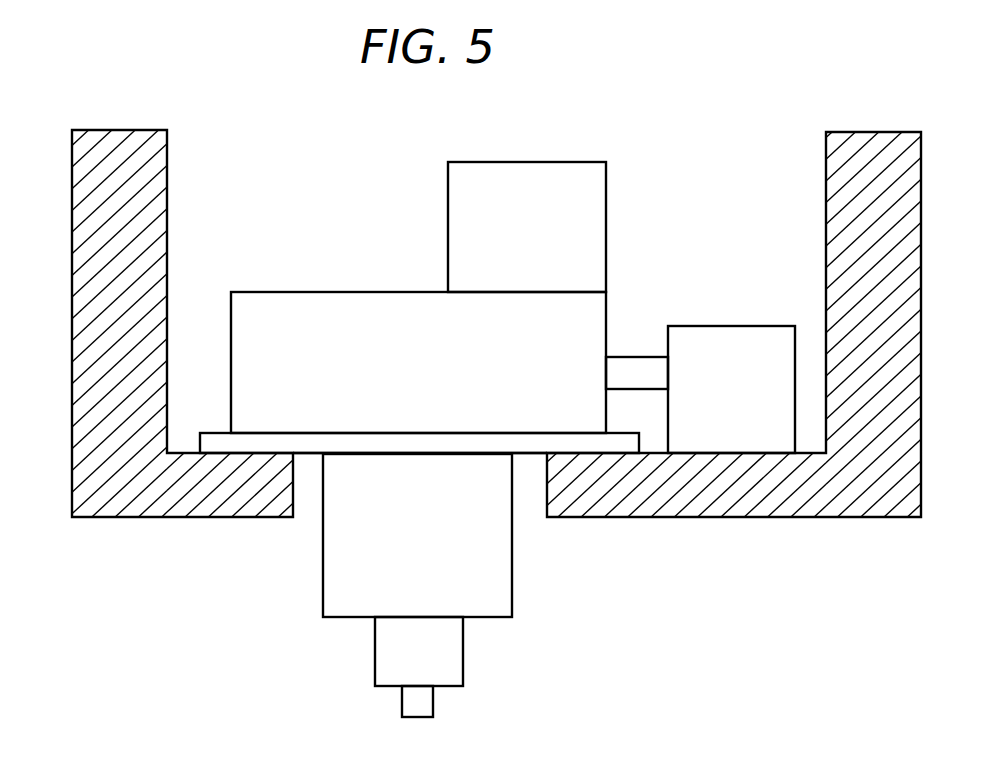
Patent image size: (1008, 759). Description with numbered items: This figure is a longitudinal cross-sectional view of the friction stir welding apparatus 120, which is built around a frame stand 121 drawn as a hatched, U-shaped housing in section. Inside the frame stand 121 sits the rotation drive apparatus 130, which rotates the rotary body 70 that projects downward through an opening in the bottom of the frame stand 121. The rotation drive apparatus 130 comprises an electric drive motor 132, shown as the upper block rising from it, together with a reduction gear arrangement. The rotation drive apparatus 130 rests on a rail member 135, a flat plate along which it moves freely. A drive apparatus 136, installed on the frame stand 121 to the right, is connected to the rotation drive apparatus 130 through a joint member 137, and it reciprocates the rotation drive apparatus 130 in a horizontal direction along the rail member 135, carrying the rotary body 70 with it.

The friction stir welding apparatus 120 is at (336, 191).
The frame stand 121 is at (710, 507).
The rotation drive apparatus 130 is at (305, 302).
The electric drive motor 132 is at (458, 195).
The rail member 135 is at (276, 438).
The drive apparatus 136 is at (697, 337).
The joint member 137 is at (631, 352).
The rotary body 70 is at (463, 657).